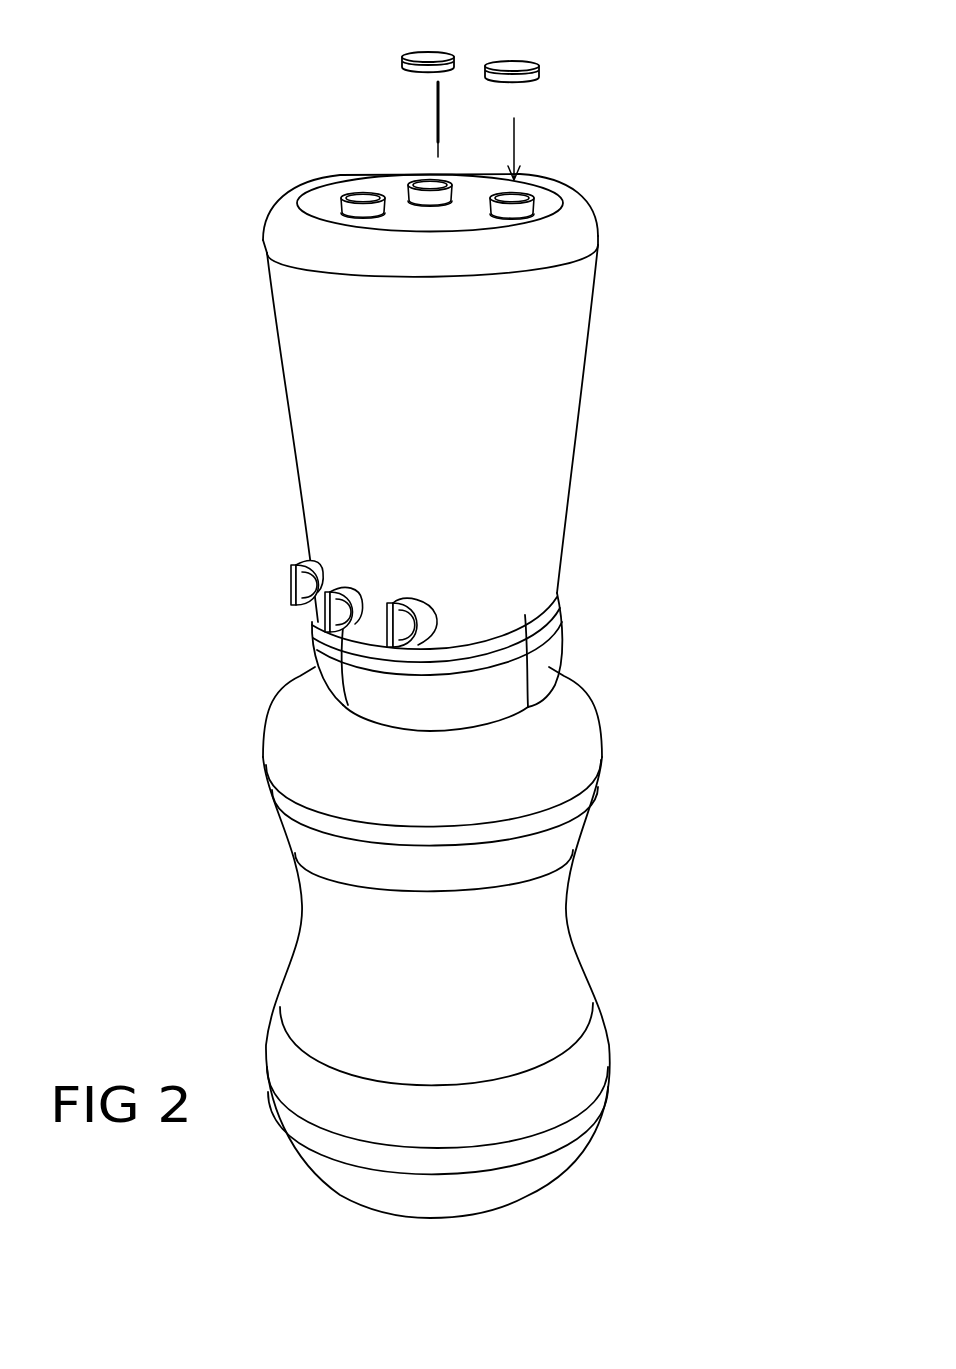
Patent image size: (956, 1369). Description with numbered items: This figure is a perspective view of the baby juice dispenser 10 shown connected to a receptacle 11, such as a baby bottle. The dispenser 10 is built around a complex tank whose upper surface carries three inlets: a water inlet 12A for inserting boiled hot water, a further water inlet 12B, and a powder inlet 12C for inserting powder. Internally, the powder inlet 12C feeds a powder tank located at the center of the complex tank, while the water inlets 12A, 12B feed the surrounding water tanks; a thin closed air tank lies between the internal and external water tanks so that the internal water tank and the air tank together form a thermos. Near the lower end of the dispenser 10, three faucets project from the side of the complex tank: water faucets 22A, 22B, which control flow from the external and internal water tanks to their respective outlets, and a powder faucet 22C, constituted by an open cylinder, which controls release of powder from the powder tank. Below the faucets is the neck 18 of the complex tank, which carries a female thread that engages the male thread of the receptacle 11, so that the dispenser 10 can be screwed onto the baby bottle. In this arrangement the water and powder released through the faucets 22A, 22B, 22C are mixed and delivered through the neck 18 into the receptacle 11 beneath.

The baby juice dispenser 10 is at (175, 353).
The receptacle 11 is at (202, 933).
The water inlet 12A is at (513, 197).
The water inlet 12B is at (427, 184).
The powder inlet 12C is at (361, 196).
The neck of complex tank 18 is at (535, 686).
The water faucet 22A is at (427, 622).
The water faucet 22B is at (303, 583).
The powder faucet 22C is at (334, 612).